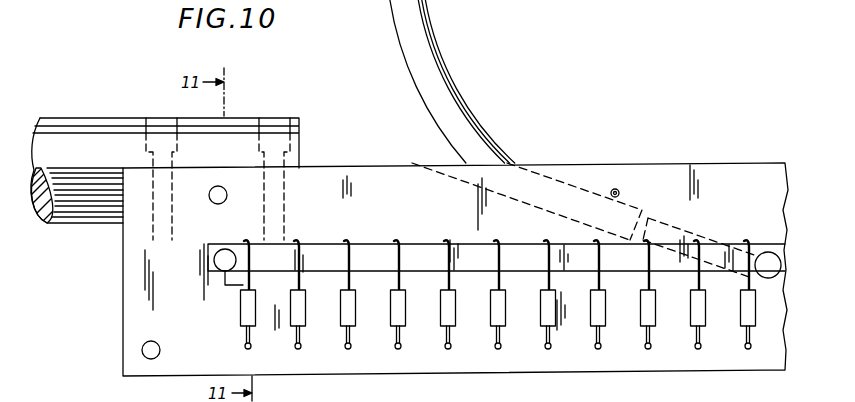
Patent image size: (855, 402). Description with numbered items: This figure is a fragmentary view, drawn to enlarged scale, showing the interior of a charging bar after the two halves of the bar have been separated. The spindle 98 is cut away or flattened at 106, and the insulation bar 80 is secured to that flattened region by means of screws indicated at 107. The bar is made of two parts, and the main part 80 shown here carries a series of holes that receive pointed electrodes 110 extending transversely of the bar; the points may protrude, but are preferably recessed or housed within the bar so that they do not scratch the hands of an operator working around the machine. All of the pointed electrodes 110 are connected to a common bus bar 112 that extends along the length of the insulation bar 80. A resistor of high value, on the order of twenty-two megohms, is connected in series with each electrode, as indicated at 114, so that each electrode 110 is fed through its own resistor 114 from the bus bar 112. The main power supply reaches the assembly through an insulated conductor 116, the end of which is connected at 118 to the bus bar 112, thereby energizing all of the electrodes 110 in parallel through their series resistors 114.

The insulation bar 80 is at (362, 177).
The spindle 98 is at (79, 123).
The flattened portion of spindle 106 is at (288, 167).
The screws 107 is at (171, 128).
The pointed electrodes 110 is at (449, 349).
The common bus bar 112 is at (360, 248).
The resistor 114 is at (349, 314).
The insulated conductor 116 is at (439, 86).
The connection of conductor to bus bar 118 is at (765, 278).